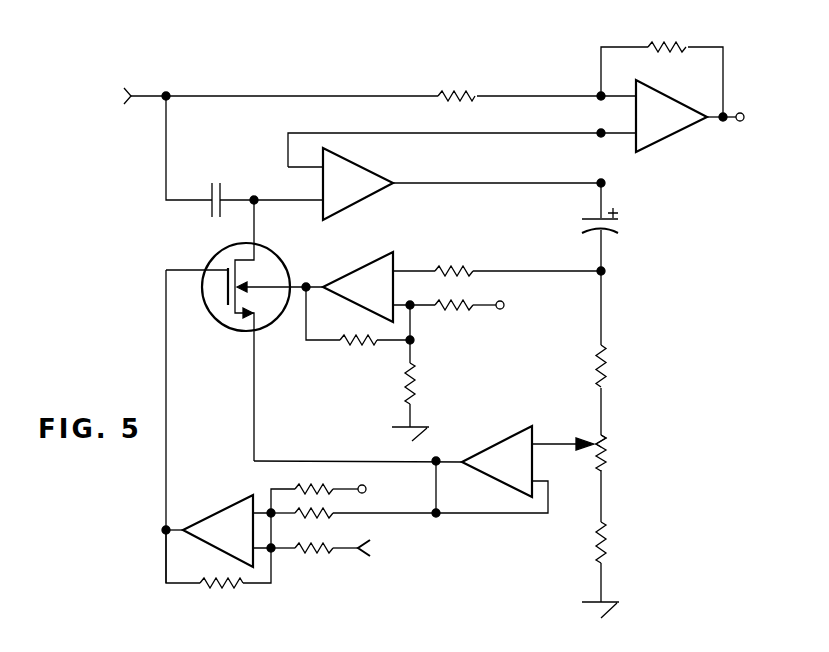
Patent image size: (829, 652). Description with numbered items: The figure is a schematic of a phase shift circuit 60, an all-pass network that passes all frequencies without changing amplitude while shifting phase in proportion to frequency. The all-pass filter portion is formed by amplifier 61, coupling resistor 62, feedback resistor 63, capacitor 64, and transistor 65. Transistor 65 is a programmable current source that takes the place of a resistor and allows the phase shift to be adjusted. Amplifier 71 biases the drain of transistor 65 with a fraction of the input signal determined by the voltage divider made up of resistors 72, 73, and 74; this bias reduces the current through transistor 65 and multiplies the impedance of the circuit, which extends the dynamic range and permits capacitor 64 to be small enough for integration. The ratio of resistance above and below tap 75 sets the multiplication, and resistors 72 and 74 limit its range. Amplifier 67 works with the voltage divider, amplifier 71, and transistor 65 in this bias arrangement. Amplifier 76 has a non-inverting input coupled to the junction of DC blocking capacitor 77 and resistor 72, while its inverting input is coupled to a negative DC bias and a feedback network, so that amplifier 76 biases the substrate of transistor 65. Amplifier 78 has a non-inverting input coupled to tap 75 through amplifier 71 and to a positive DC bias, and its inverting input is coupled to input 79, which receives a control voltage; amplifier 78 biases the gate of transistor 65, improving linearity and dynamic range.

The phase shift circuit 60 is at (97, 103).
The amplifier 61 is at (668, 139).
The coupling resistor 62 is at (438, 93).
The feedback resistor 63 is at (648, 44).
The capacitor 64 is at (214, 180).
The transistor 65 is at (215, 254).
The amplifier 67 is at (368, 166).
The amplifier 71 is at (521, 432).
The resistor 72 is at (608, 364).
The resistor 73 is at (608, 449).
The resistor 74 is at (611, 540).
The tap 75 is at (566, 441).
The amplifier 76 is at (376, 262).
The DC blocking capacitor 77 is at (580, 219).
The amplifier 78 is at (244, 503).
The input 79 is at (373, 551).